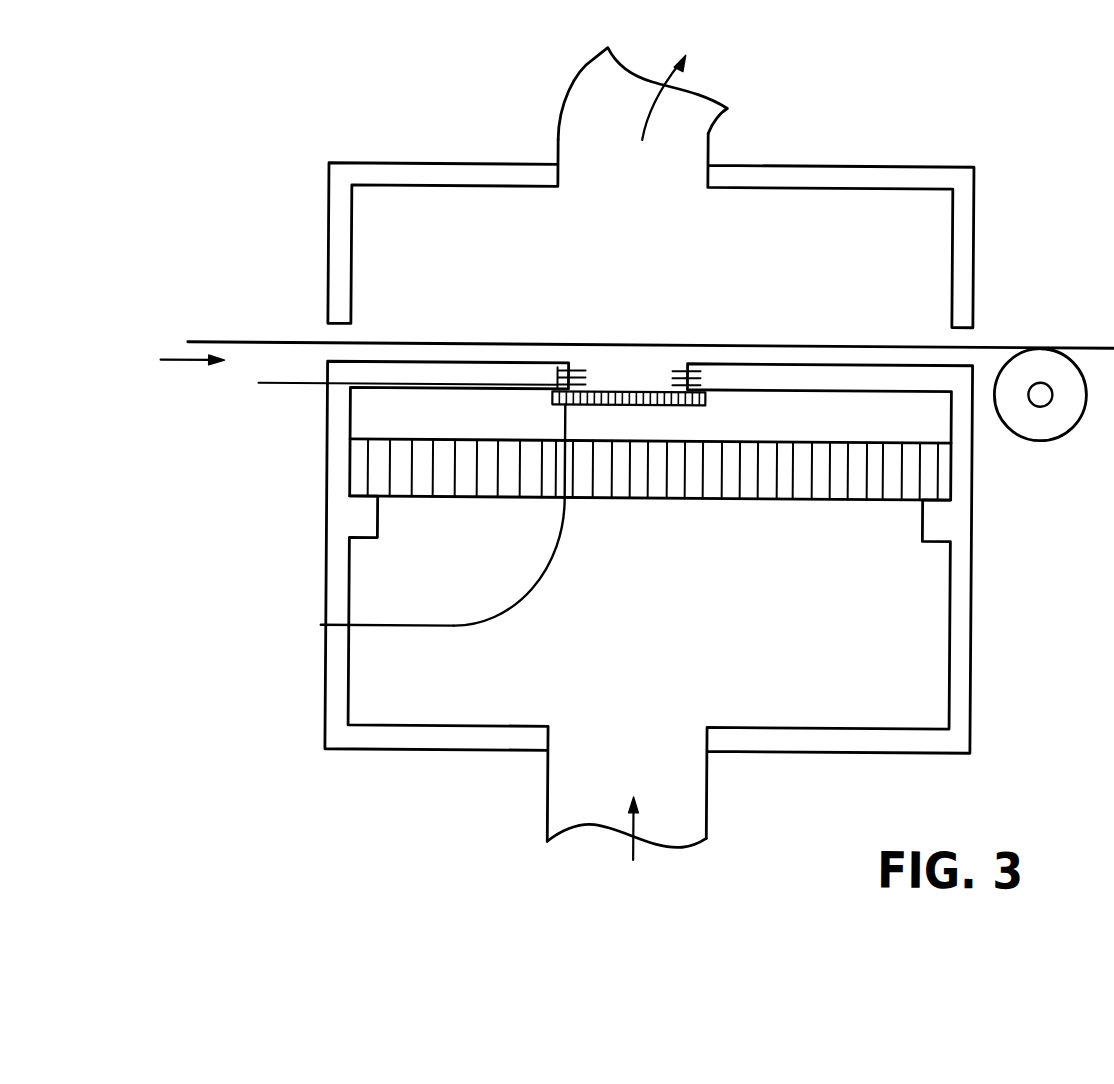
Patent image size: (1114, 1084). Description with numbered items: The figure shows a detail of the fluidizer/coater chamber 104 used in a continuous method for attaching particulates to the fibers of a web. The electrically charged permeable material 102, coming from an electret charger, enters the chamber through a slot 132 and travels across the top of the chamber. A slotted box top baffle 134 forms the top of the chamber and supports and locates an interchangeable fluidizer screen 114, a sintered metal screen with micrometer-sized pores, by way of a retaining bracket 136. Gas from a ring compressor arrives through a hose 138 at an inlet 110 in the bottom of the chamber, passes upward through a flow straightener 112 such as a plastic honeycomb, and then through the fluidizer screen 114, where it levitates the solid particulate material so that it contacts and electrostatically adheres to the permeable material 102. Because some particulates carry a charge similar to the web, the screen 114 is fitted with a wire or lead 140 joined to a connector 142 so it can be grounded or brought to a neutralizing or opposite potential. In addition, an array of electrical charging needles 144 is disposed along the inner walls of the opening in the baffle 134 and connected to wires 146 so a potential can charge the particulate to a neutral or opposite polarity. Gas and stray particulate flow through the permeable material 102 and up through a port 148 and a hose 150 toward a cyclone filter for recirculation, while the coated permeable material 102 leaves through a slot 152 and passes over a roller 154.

The electrically charged permeable material 102 is at (226, 343).
The fluidizer/coater chamber 104 is at (323, 810).
The inlet 110 is at (726, 772).
The flow straightener 112 is at (785, 517).
The fluidizer screen 114 is at (632, 375).
The slot 132 is at (305, 315).
The slotted box top baffle 134 is at (776, 371).
The retaining bracket 136 is at (700, 412).
The hose 138 is at (611, 784).
The wire or lead 140 is at (528, 594).
The connector 142 is at (322, 627).
The electrical charging needles 144 is at (574, 333).
The wires 146 is at (289, 386).
The port 148 is at (710, 166).
The hose 150 is at (625, 125).
The slot 152 is at (992, 330).
The roller 154 is at (1068, 434).